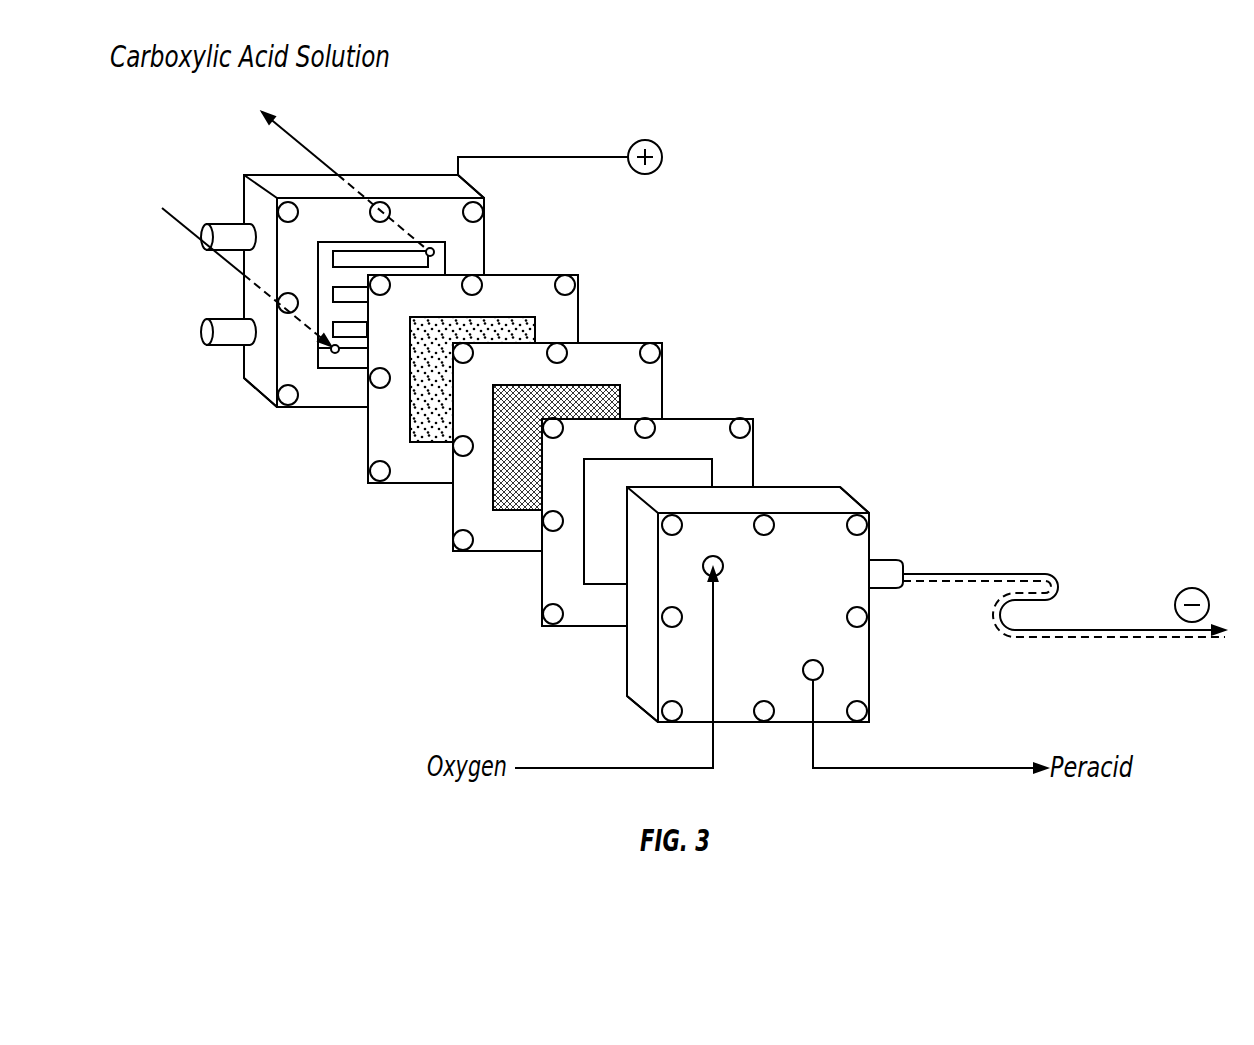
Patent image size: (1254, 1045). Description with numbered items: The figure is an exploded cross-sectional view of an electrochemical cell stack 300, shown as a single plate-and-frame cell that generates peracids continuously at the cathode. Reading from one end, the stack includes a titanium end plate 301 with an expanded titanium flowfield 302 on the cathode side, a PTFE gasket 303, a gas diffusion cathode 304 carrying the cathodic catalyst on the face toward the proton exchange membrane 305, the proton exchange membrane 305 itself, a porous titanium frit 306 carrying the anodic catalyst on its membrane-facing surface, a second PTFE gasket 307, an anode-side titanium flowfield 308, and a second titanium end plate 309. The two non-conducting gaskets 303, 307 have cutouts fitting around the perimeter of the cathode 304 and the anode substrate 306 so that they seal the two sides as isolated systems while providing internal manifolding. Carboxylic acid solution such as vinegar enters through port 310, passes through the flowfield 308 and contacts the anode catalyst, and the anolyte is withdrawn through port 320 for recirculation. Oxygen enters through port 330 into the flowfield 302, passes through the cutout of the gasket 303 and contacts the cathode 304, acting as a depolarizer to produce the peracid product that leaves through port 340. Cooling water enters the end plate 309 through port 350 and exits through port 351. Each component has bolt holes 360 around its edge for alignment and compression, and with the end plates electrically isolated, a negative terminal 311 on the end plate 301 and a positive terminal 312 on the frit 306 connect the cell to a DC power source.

The electrochemical cell stack 300 is at (538, 118).
The titanium end plate 301 is at (840, 503).
The expanded titanium flowfield 302 is at (618, 644).
The PTFE gasket 303 is at (733, 472).
The gas diffusion cathode 304 is at (513, 480).
The proton exchange membrane 305 is at (645, 397).
The porous titanium frit 306 is at (423, 415).
The second PTFE gasket 307 is at (560, 328).
The titanium flowfield 308 is at (325, 327).
The titanium end plate 309 is at (470, 243).
The port 310 is at (335, 353).
The negative terminal 311 is at (1192, 588).
The positive terminal 312 is at (652, 140).
The port 320 is at (431, 248).
The port 330 is at (725, 566).
The port 340 is at (805, 672).
The port 350 is at (195, 330).
The port 351 is at (200, 233).
The bolt holes 360 is at (860, 711).